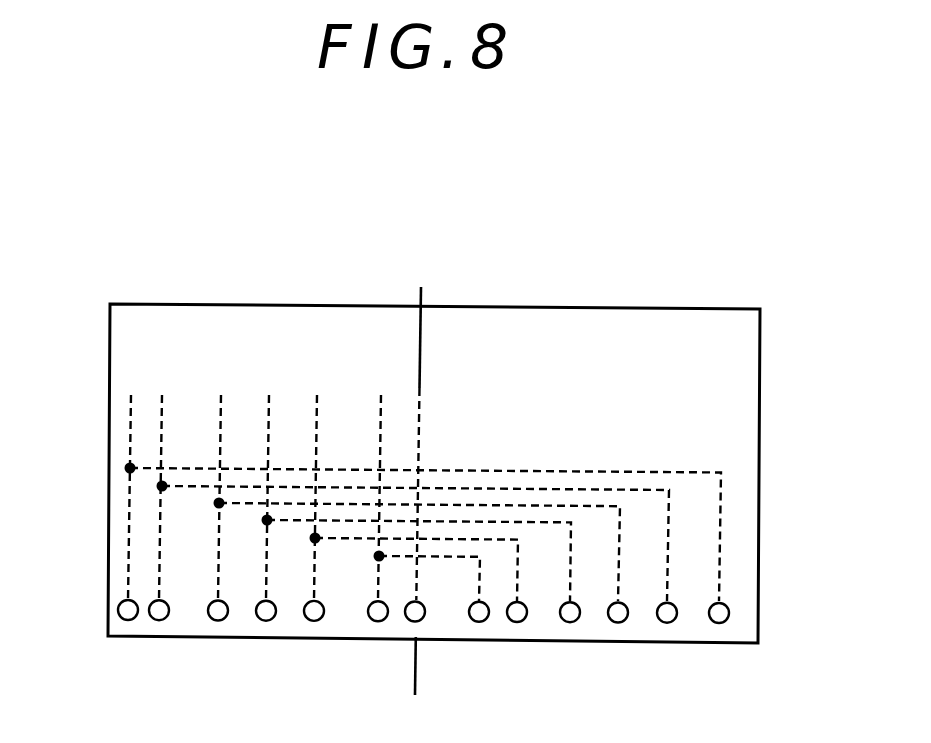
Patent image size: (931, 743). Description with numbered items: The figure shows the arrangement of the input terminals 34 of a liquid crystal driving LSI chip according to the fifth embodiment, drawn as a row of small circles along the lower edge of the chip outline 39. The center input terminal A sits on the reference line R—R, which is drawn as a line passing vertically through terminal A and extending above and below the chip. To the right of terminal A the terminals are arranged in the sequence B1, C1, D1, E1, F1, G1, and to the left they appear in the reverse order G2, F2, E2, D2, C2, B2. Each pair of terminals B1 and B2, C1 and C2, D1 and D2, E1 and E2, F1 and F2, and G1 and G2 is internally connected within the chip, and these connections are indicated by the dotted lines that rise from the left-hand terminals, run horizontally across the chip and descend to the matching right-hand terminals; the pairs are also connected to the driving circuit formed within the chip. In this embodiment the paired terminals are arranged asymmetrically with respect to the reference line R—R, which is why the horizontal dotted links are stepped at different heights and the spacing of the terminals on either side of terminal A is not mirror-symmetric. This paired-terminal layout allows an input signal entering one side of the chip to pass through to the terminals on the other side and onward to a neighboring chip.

The input terminal 34 is at (117, 610).
The wiring board 39 is at (733, 386).
The reference line R is at (416, 496).
The center input terminal A is at (427, 588).
The input terminal B1 is at (495, 588).
The input terminal B2 is at (394, 587).
The input terminal C1 is at (533, 588).
The input terminal C2 is at (330, 587).
The input terminal D1 is at (587, 588).
The input terminal D2 is at (283, 587).
The input terminal E1 is at (634, 589).
The input terminal E2 is at (234, 587).
The input terminal F1 is at (682, 589).
The input terminal F2 is at (174, 586).
The input terminal G1 is at (736, 589).
The input terminal G2 is at (145, 586).